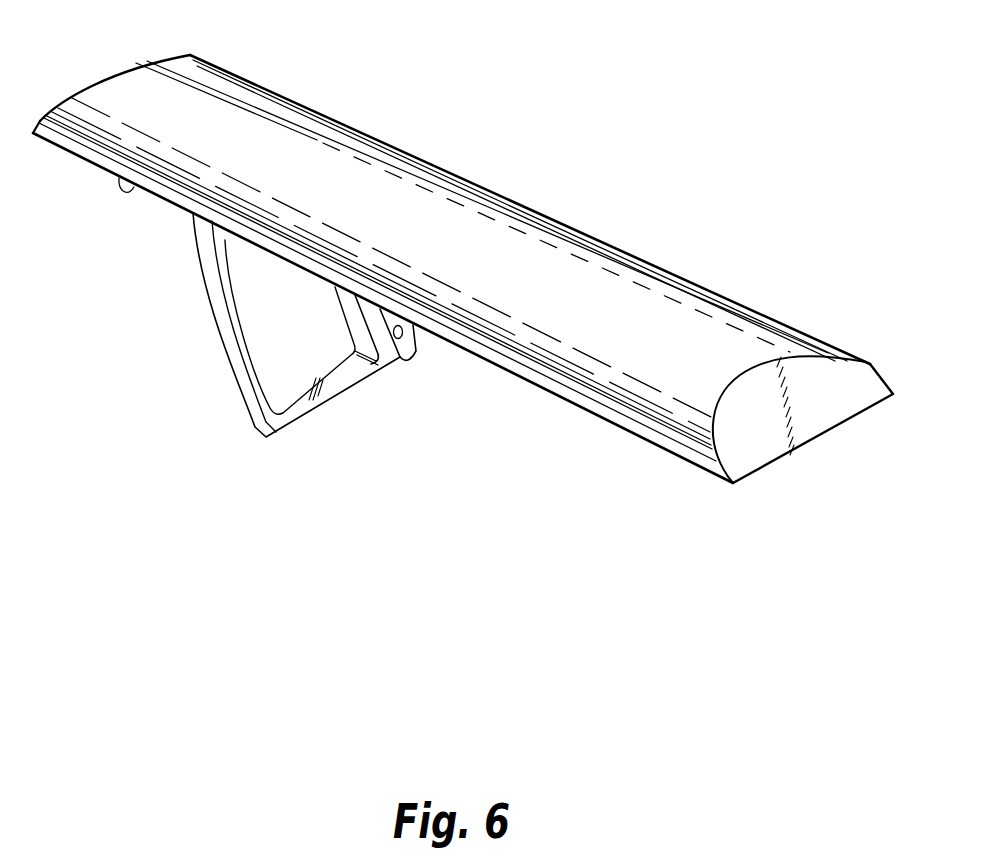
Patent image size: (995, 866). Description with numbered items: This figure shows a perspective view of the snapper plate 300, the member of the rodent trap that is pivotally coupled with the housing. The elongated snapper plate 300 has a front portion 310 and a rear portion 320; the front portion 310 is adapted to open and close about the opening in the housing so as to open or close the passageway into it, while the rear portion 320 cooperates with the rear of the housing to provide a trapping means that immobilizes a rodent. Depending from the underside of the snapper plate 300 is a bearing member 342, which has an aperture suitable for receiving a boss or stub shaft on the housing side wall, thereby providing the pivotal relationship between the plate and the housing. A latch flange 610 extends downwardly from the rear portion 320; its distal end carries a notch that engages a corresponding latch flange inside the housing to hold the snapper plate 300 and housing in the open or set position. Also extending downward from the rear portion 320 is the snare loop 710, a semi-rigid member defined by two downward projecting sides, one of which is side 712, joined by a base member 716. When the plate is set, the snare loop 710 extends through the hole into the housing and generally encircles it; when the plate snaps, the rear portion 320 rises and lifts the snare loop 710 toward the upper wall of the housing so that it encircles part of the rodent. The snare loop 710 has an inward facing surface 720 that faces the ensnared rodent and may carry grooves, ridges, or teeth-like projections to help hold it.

The snapper plate 300 is at (628, 254).
The front portion 310 is at (785, 325).
The rear portion 320 is at (199, 54).
The bearing member 342 is at (421, 338).
The latch flange 610 is at (122, 190).
The snare loop 710 is at (238, 400).
The side 712 is at (210, 309).
The base member 716 is at (310, 398).
The inward facing surface 720 is at (347, 373).